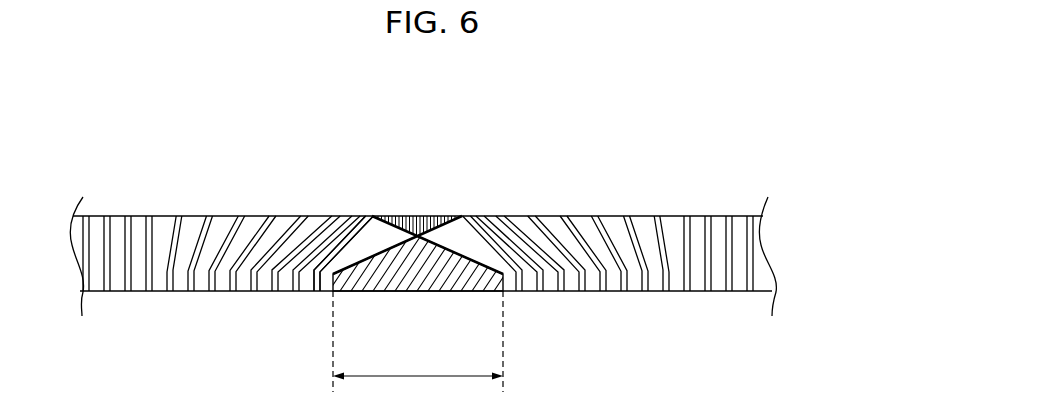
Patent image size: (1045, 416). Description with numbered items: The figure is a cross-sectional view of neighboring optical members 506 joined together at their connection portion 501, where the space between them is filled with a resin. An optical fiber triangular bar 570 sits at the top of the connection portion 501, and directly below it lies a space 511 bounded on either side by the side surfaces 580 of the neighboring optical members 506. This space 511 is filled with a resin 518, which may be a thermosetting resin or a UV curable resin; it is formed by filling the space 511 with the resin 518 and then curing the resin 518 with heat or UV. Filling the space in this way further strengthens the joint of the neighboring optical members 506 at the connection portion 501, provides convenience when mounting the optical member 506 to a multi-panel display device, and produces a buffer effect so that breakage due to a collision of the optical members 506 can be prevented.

The optical member 506 is at (694, 181).
The space 511 is at (443, 300).
The resin 518 is at (449, 272).
The optical fiber triangular bar 570 is at (419, 215).
The side surface 580 is at (378, 256).
The connection portion 501 is at (418, 350).